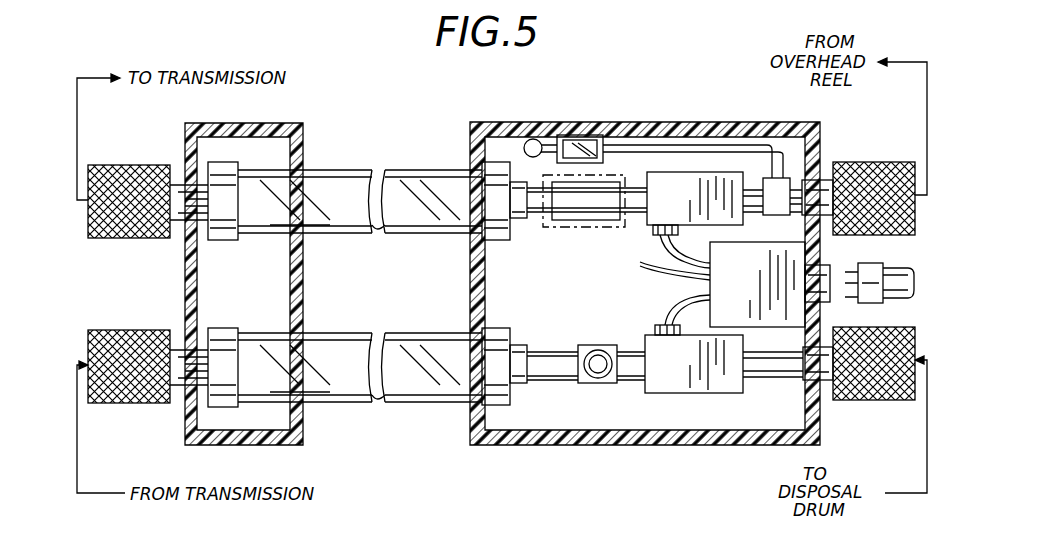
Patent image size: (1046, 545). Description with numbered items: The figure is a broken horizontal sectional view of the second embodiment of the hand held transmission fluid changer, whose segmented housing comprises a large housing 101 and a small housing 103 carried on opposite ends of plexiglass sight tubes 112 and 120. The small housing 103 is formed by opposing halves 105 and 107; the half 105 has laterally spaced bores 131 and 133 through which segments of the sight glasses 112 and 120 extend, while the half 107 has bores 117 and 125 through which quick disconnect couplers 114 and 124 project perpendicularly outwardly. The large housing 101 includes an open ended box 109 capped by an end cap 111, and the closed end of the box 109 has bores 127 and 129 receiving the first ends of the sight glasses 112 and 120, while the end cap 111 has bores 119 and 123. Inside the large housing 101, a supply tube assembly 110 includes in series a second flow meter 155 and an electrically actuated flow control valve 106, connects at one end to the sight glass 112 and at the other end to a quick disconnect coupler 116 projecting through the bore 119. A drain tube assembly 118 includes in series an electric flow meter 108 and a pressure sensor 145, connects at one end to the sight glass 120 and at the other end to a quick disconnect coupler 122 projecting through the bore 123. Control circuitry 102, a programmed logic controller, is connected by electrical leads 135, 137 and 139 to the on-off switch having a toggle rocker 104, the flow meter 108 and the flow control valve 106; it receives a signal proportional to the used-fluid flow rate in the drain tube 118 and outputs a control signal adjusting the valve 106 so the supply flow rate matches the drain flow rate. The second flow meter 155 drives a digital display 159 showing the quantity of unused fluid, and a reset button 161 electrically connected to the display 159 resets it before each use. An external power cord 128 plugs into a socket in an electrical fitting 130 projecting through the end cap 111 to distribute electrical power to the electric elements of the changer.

The large housing 101 is at (580, 450).
The control circuitry 102 is at (765, 320).
The small housing 103 is at (280, 448).
The toggle rocker 104 is at (566, 230).
The half 105 is at (282, 128).
The electric flow control valve 106 is at (705, 172).
The half 107 is at (240, 123).
The electric flow meter 108 is at (668, 393).
The open ended box 109 is at (690, 122).
The supply tube assembly 110 is at (754, 215).
The end cap 111 is at (803, 130).
The sight tube 112 is at (400, 172).
The quick disconnect coupler 114 is at (132, 166).
The quick disconnect coupler 116 is at (896, 162).
The bore 117 is at (182, 180).
The drain tube assembly 118 is at (780, 382).
The bore 119 is at (815, 180).
The sight tube 120 is at (400, 398).
The quick disconnect coupler 122 is at (880, 402).
The bore 123 is at (818, 382).
The quick disconnect coupler 124 is at (116, 403).
The bore 125 is at (182, 392).
The bore 127 is at (486, 172).
The external power cord 128 is at (900, 276).
The bore 129 is at (486, 338).
The electrical fitting 130 is at (830, 272).
The bore 131 is at (308, 348).
The bore 133 is at (310, 170).
The electrical lead 135 is at (705, 245).
The electrical lead 137 is at (655, 270).
The electrical lead 139 is at (666, 306).
The pressure sensor 145 is at (596, 385).
The second flow meter 155 is at (782, 178).
The digital display 159 is at (616, 135).
The reset button 161 is at (540, 140).